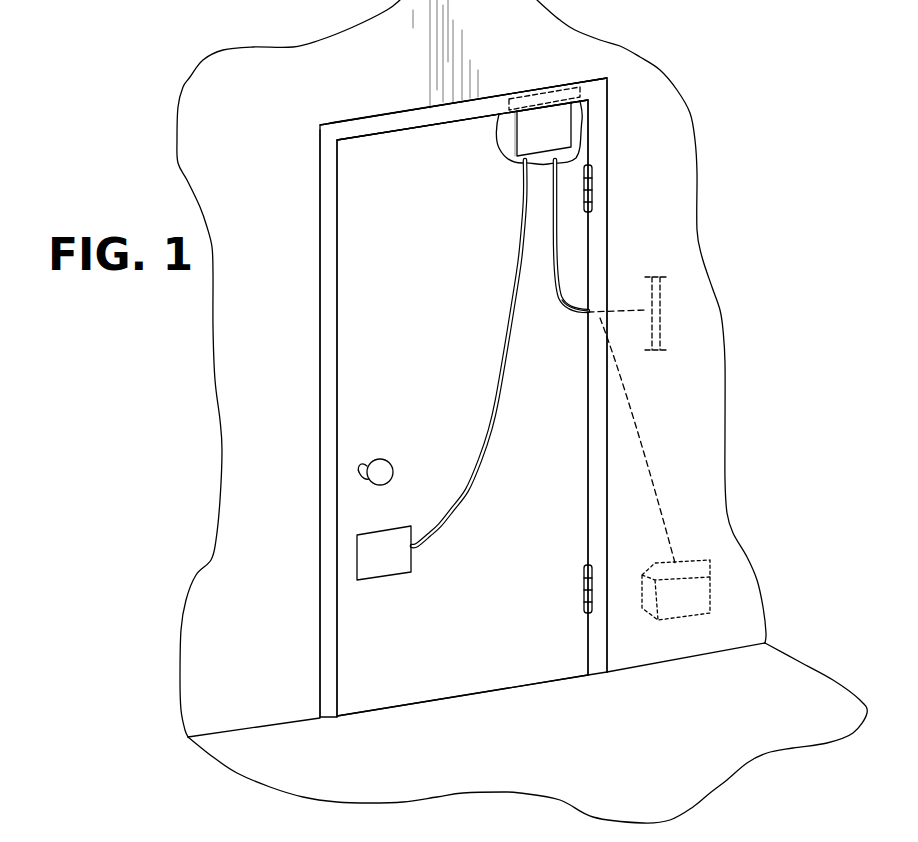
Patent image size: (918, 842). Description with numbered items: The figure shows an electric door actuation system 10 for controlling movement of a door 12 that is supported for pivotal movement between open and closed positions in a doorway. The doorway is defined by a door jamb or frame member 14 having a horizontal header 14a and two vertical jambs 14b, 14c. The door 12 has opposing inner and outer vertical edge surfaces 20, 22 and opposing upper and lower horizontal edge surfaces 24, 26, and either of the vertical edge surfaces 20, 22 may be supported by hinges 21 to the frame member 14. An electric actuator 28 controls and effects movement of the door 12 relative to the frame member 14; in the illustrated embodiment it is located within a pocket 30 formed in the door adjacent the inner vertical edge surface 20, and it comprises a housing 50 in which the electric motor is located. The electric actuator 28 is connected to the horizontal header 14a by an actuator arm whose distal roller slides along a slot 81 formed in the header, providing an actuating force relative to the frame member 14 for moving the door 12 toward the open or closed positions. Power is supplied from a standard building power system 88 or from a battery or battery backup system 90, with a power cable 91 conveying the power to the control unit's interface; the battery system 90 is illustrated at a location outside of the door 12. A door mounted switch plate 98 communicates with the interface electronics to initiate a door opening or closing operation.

The electric door actuation system 10 is at (632, 70).
The door 12 is at (375, 155).
The frame member 14 is at (320, 153).
The horizontal header 14a is at (412, 110).
The vertical jamb 14b is at (608, 195).
The vertical jamb 14c is at (320, 332).
The inner vertical edge surface 20 is at (590, 293).
The hinges 21 is at (594, 181).
The outer vertical edge surface 22 is at (337, 492).
The upper horizontal edge surface 24 is at (478, 117).
The lower horizontal edge surface 26 is at (482, 690).
The electric actuator 28 is at (535, 129).
The pocket 30 is at (515, 137).
The housing 50 is at (553, 118).
The slot 81 is at (547, 90).
The building power system 88 is at (670, 318).
The battery system 90 is at (712, 606).
The power cable 91 is at (575, 313).
The door mounted switch plate 98 is at (388, 578).